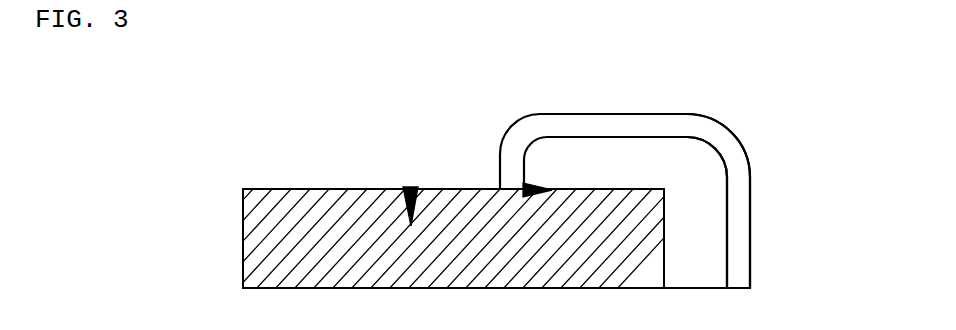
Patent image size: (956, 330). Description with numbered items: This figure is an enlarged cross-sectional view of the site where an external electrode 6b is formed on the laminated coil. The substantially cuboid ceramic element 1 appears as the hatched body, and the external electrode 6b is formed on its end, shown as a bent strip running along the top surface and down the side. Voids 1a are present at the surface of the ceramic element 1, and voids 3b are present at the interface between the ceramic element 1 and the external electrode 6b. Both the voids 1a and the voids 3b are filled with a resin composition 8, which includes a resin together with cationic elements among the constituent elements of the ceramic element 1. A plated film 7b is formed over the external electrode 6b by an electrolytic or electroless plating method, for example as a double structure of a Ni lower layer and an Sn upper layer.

The ceramic element 1 is at (267, 242).
The voids 1a is at (401, 190).
The resin composition 8 is at (410, 188).
The voids 3b is at (540, 187).
The plated film 7b is at (723, 149).
The external electrode 6b is at (712, 240).